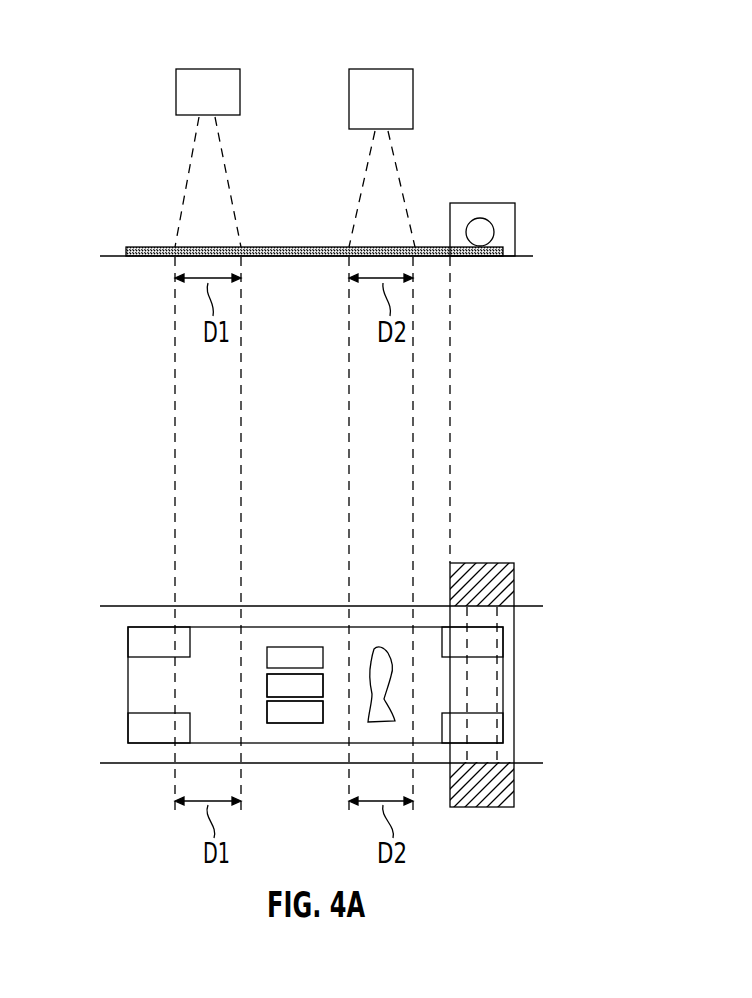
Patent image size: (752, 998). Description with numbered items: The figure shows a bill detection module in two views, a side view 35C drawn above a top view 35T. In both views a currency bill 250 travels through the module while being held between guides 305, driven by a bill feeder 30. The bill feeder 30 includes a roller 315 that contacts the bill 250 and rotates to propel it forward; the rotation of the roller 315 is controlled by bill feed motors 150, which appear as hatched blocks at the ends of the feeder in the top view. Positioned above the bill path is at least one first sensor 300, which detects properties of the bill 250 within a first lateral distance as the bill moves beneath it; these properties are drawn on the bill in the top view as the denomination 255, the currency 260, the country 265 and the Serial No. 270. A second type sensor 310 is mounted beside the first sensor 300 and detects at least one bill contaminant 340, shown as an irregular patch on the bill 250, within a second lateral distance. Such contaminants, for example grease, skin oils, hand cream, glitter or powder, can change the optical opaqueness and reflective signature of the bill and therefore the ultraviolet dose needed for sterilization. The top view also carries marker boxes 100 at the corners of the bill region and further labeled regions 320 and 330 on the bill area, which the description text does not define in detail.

The side view 35C is at (145, 70).
The top view 35T is at (148, 562).
The first sensor 300 is at (207, 80).
The second type sensor 310 is at (380, 80).
The bill 250 is at (288, 246).
The bill feeder 30 is at (483, 203).
The roller 315 is at (485, 233).
The bill feed motors 150 is at (515, 583).
The guides 305 is at (120, 765).
The tray marker 100 is at (315, 686).
The denomination 255 is at (128, 645).
The currency 260 is at (282, 646).
The country 265 is at (266, 685).
The Serial No. 270 is at (293, 724).
The bill contaminant 340 is at (383, 648).
The object region 330 is at (387, 733).
The tray region 320 is at (206, 730).